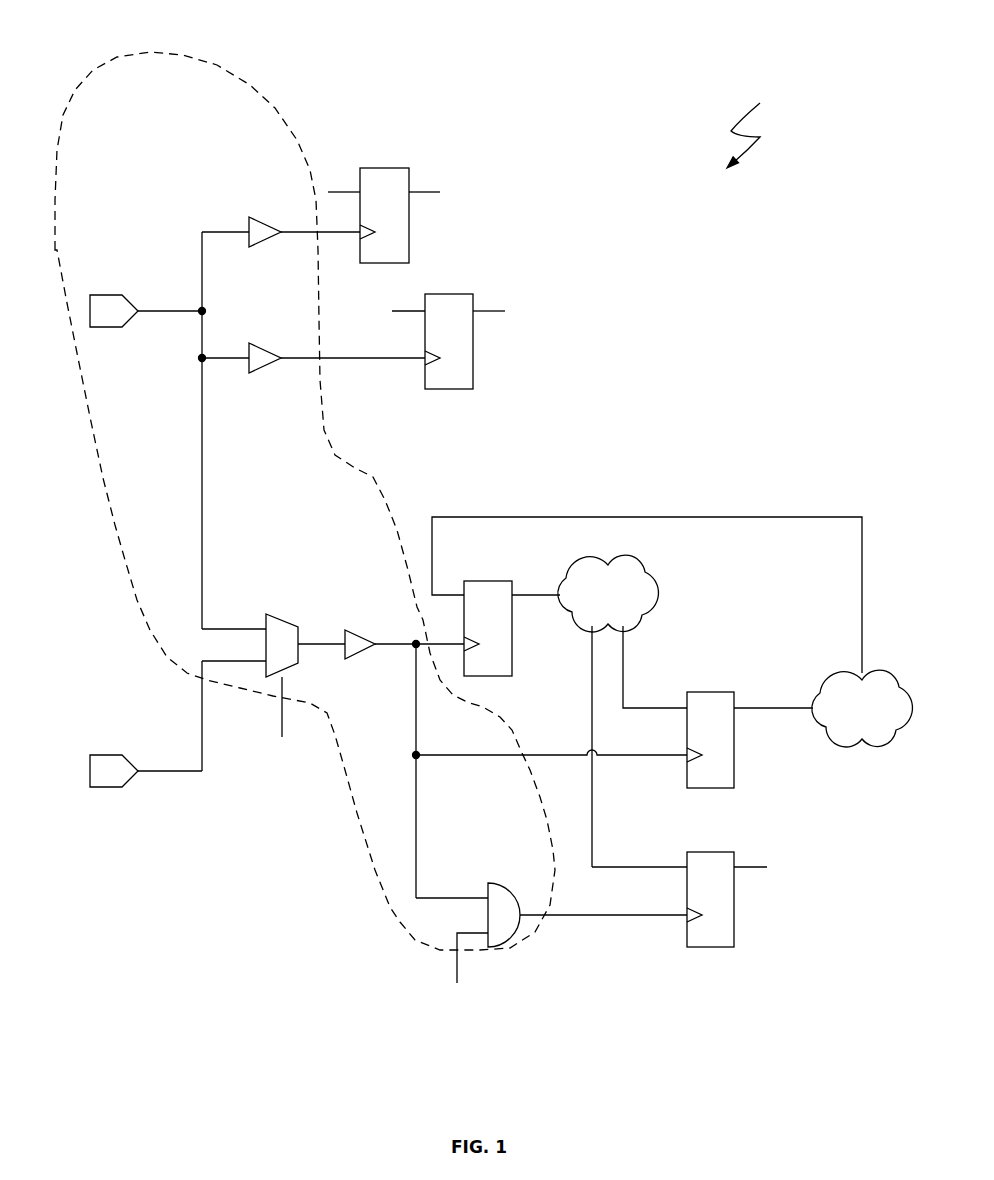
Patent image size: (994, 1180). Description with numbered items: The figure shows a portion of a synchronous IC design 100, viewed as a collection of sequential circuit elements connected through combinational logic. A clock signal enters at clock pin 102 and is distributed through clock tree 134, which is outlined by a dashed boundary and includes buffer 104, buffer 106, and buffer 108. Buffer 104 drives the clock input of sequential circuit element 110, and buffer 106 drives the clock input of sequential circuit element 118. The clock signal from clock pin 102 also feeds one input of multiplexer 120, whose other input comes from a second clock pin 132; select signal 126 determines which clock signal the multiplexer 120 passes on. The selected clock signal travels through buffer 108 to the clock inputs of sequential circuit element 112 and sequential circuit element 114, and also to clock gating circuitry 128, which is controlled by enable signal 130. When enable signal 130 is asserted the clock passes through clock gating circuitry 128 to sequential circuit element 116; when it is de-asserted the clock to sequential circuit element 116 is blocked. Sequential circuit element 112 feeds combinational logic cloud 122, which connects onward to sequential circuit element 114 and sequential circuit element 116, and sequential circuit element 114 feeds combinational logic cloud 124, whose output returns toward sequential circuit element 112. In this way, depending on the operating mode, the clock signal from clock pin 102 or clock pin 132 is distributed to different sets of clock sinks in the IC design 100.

The IC design 100 is at (780, 119).
The clock pin 102 is at (134, 284).
The buffer 104 is at (257, 204).
The buffer 106 is at (265, 390).
The buffer 108 is at (361, 620).
The sequential circuit element 110 is at (384, 215).
The sequential circuit element 112 is at (488, 628).
The sequential circuit element 114 is at (710, 740).
The sequential circuit element 116 is at (710, 899).
The sequential circuit element 118 is at (449, 341).
The multiplexer 120 is at (280, 620).
The combinational logic cloud 122 is at (608, 593).
The combinational logic cloud 124 is at (862, 708).
The select signal 126 is at (282, 749).
The clock gating circuitry 128 is at (497, 878).
The enable signal 130 is at (458, 1001).
The clock pin 132 is at (134, 745).
The clock tree 134 is at (188, 55).